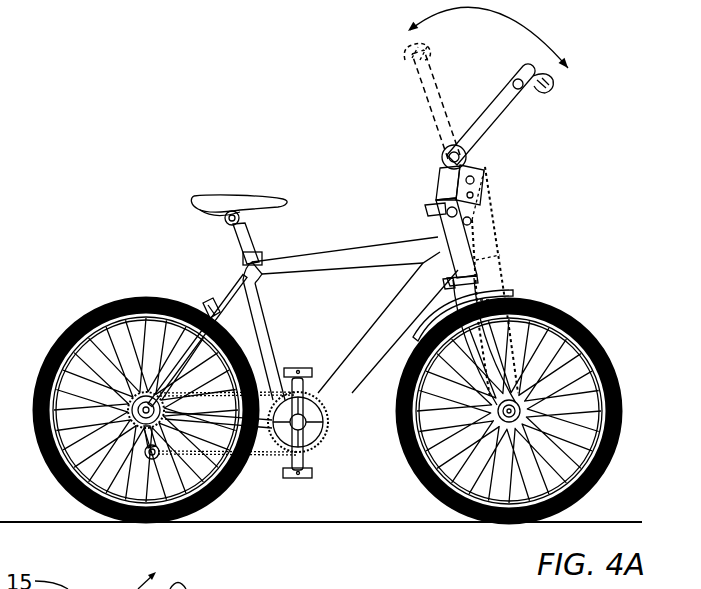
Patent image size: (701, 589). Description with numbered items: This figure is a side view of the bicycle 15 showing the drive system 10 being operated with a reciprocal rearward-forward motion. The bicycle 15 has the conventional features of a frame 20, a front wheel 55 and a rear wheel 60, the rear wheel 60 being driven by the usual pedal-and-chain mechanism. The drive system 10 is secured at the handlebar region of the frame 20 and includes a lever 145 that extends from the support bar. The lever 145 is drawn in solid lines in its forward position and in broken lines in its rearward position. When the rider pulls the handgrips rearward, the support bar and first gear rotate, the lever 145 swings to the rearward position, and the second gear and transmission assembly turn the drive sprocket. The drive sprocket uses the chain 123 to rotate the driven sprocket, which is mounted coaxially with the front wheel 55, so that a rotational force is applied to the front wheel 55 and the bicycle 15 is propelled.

The drive system 10 is at (535, 157).
The bicycle 15 is at (311, 117).
The frame 20 is at (343, 261).
The front wheel 55 is at (570, 328).
The rear wheel 60 is at (100, 313).
The chain 123 is at (507, 253).
The lever 145 is at (433, 110).